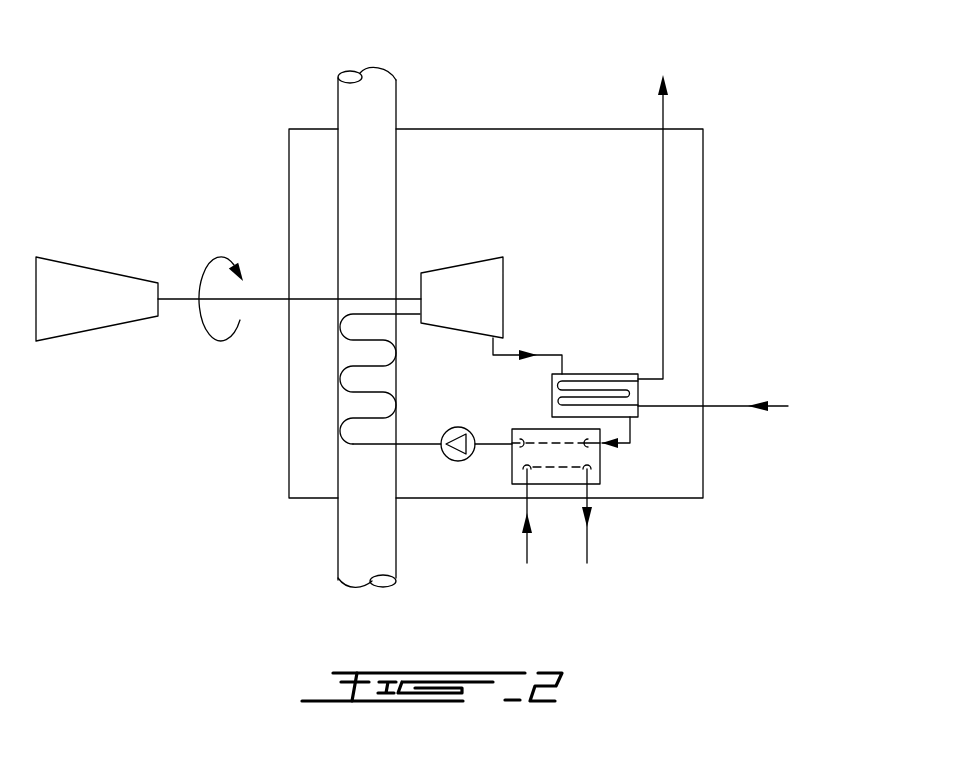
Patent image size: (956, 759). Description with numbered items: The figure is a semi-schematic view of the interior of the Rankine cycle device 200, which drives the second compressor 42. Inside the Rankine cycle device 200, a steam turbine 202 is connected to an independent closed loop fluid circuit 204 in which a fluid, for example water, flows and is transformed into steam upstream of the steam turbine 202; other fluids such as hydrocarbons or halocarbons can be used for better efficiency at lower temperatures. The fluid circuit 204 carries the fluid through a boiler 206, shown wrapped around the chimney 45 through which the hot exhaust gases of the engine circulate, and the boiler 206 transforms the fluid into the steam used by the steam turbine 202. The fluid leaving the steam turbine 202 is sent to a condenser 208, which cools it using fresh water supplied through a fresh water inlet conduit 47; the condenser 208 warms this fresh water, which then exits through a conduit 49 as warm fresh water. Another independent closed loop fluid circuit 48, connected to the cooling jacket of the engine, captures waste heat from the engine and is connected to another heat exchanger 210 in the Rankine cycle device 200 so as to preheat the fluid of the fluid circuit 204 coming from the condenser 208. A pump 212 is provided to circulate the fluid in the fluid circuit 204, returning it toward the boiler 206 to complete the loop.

The Rankine cycle device 200 is at (810, 112).
The second compressor 42 is at (72, 265).
The chimney 45 is at (356, 538).
The fresh water inlet conduit 47 is at (730, 406).
The independent closed loop fluid circuit 48 is at (526, 540).
The conduit 49 is at (663, 108).
The steam turbine 202 is at (488, 279).
The independent closed loop fluid circuit 204 is at (370, 458).
The boiler 206 is at (343, 376).
The condenser 208 is at (596, 374).
The heat exchanger 210 is at (600, 473).
The pump 212 is at (462, 461).